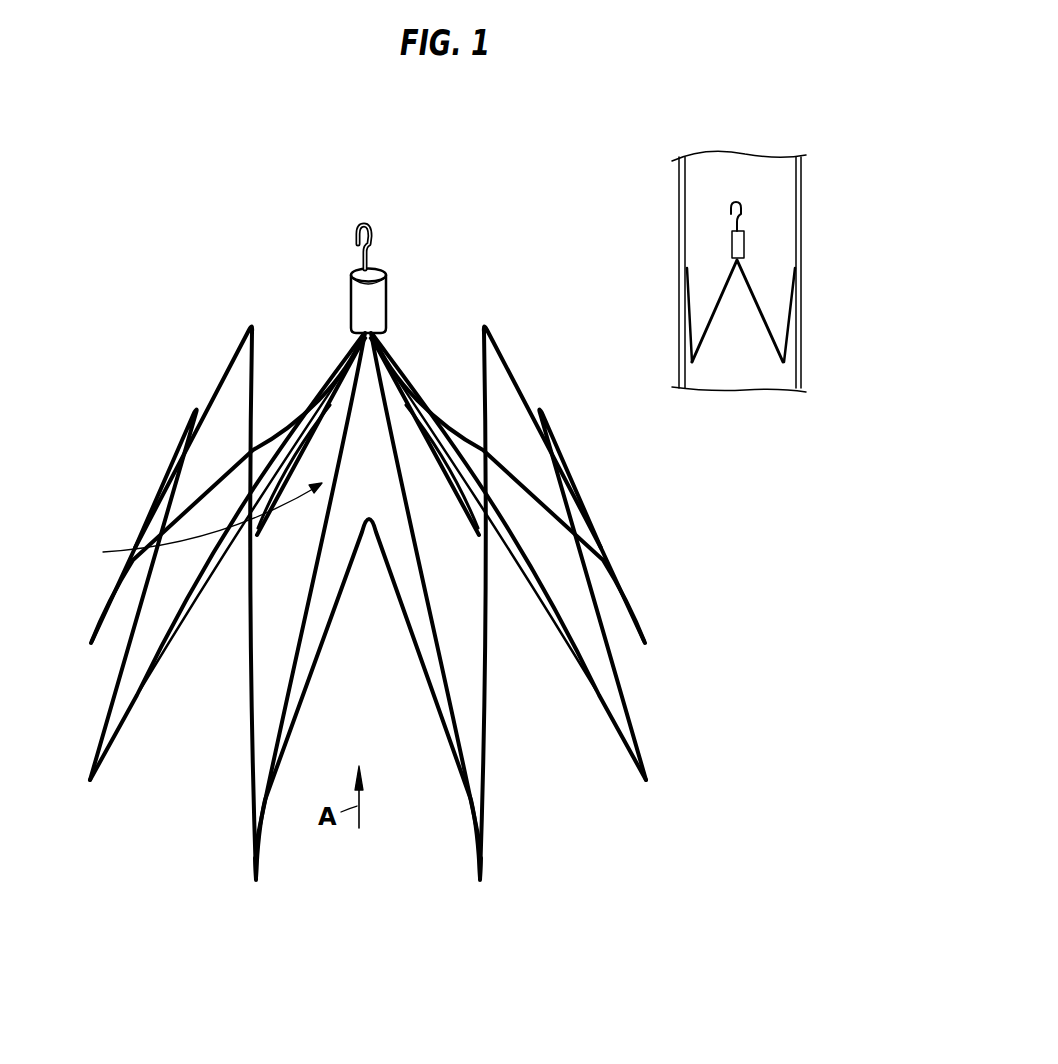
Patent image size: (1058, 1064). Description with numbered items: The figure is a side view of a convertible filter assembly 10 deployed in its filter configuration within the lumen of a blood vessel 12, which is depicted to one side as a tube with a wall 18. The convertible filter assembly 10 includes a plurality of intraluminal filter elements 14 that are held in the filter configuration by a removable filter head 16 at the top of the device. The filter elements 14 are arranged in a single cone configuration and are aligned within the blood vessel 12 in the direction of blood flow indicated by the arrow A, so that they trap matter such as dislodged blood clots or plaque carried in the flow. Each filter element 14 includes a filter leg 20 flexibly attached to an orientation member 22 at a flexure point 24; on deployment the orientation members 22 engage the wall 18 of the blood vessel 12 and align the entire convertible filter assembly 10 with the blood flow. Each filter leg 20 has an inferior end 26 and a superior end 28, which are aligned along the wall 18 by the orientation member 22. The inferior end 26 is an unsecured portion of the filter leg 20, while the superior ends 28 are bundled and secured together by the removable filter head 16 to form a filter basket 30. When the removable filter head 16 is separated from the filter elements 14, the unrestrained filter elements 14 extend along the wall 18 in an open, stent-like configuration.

The convertible filter assembly 10 is at (375, 552).
The blood vessel 12 is at (782, 271).
The intraluminal filter elements 14 is at (600, 512).
The removable filter head 16 is at (388, 297).
The wall 18 is at (799, 258).
The filter leg 20 is at (315, 572).
The orientation member 22 is at (140, 695).
The flexure point 24 is at (262, 864).
The inferior end 26 is at (267, 760).
The superior end 28 is at (349, 399).
The filter basket 30 is at (198, 525).